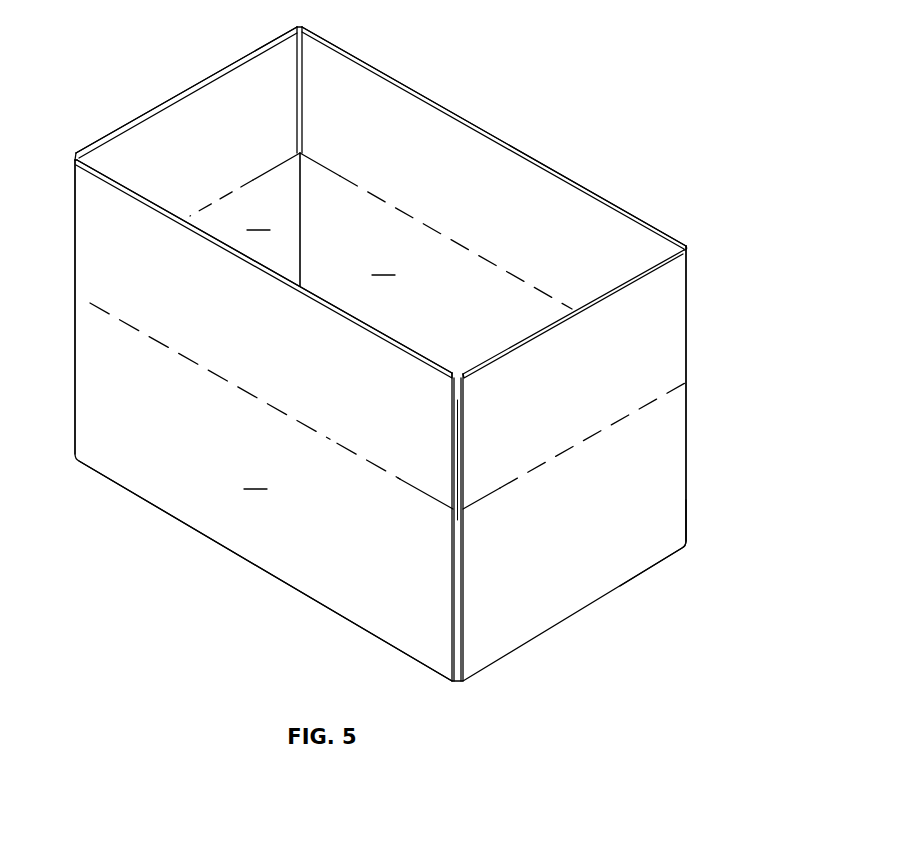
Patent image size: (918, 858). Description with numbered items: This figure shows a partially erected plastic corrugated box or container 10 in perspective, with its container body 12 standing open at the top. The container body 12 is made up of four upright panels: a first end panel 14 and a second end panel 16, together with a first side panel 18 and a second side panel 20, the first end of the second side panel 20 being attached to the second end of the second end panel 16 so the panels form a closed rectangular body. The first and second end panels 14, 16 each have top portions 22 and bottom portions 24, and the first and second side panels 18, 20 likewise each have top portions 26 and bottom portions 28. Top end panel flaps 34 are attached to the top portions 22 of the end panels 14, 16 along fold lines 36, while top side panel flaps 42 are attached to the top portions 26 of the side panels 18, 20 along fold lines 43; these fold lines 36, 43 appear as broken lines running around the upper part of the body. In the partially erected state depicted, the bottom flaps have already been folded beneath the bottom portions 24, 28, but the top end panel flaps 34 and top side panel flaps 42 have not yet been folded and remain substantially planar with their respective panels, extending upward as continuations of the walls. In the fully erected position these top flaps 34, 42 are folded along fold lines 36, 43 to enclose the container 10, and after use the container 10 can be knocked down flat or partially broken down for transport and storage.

The container 10 is at (582, 76).
The container body 12 is at (693, 439).
The first end panel 14 is at (562, 598).
The second end panel 16 is at (186, 129).
The first side panel 18 is at (491, 156).
The second side panel 20 is at (263, 420).
The top portions 22 is at (221, 210).
The bottom portions 24 is at (660, 548).
The top portions 26 is at (88, 300).
The bottom portions 28 is at (218, 527).
The top end panel flaps 34 is at (157, 121).
The fold lines 36 is at (280, 165).
The top side panel flaps 42 is at (450, 130).
The fold lines 43 is at (422, 222).